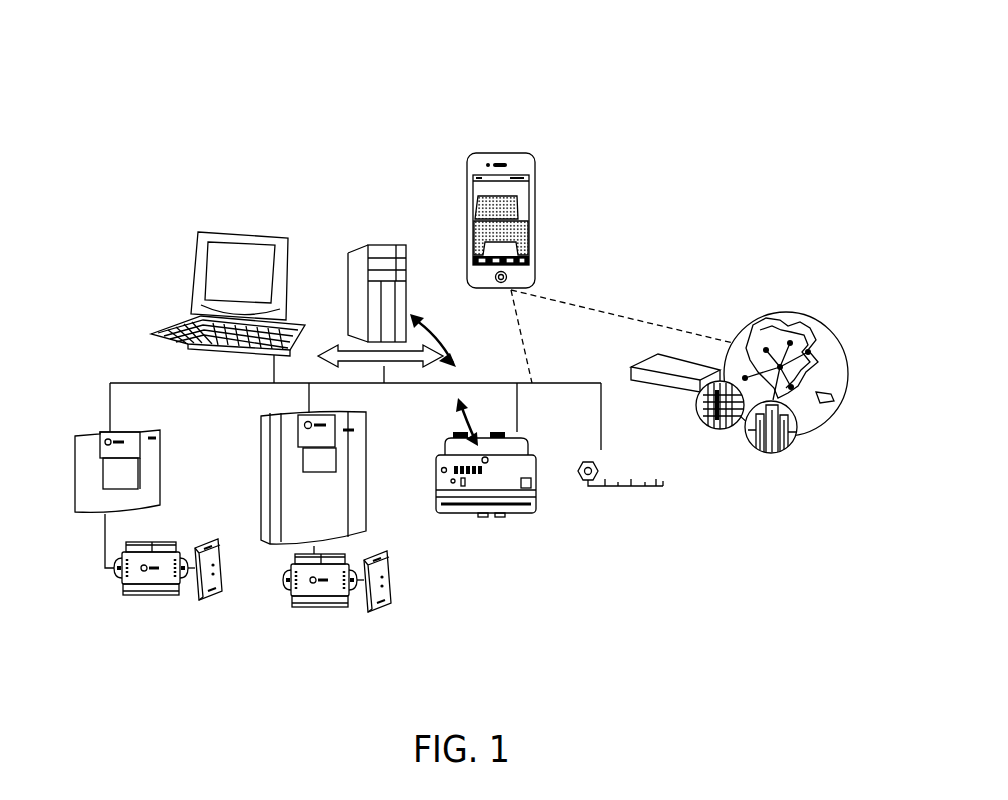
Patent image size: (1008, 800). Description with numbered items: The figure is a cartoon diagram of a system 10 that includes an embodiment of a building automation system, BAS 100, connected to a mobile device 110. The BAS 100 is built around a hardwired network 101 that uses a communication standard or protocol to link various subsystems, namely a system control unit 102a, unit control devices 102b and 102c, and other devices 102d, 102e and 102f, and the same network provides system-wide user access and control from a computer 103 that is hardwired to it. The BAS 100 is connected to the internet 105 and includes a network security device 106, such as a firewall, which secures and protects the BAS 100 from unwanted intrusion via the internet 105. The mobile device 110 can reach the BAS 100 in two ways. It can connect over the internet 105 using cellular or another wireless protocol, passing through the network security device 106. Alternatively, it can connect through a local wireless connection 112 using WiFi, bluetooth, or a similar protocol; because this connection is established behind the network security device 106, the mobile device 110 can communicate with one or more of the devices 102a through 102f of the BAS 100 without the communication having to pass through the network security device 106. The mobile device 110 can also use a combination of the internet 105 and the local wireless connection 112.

The system 10 is at (717, 74).
The BAS 100 is at (648, 544).
The hardwired network 101 is at (555, 384).
The system control unit 102a is at (505, 522).
The unit control device 102b is at (393, 613).
The unit control device 102c is at (208, 627).
The other device 102d is at (366, 471).
The other device 102e is at (87, 514).
The other device 102f is at (348, 280).
The computer 103 is at (197, 253).
The internet 105 is at (658, 330).
The network security device 106 is at (685, 395).
The mobile device 110 is at (513, 153).
The local wireless connection 112 is at (513, 303).